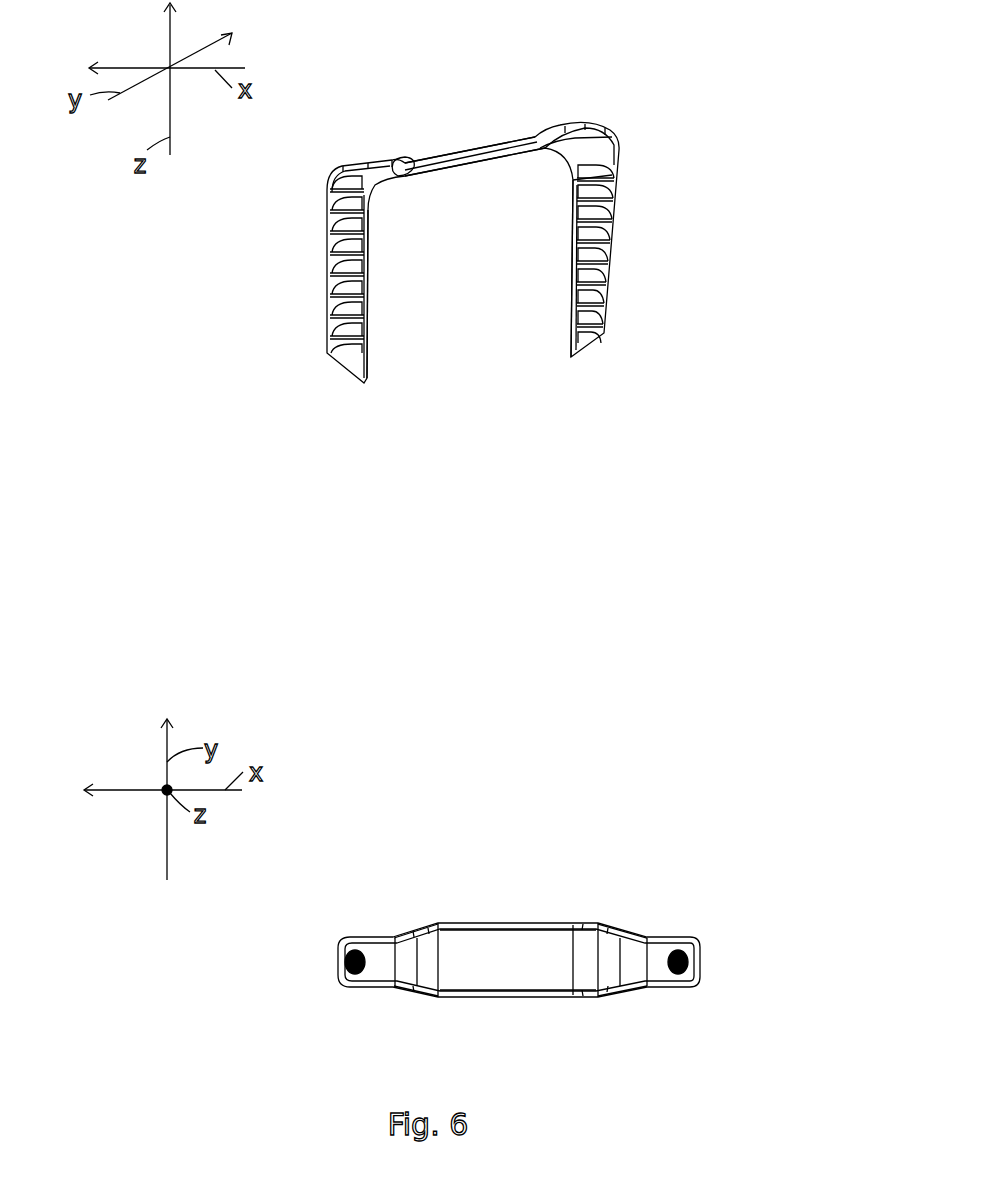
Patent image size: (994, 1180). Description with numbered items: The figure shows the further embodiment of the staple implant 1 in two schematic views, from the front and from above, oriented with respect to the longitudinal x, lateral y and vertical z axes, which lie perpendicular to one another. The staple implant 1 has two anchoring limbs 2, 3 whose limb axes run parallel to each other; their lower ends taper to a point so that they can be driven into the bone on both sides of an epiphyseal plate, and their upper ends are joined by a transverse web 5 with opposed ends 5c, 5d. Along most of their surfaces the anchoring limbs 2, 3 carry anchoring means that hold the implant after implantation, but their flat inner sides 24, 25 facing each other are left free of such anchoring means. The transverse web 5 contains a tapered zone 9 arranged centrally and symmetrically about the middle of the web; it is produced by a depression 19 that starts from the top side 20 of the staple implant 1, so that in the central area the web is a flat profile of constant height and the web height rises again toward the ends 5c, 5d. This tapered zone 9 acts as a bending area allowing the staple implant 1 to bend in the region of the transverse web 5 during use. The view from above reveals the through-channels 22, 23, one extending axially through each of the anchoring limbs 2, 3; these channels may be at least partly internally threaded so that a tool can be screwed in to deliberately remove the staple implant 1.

The staple implant 1 is at (636, 88).
The anchoring limb 2 is at (345, 272).
The anchoring limb 3 is at (608, 207).
The transverse web 5 is at (405, 172).
The tapered zone 9 is at (452, 172).
The depression 19 is at (478, 163).
The flat inner side 24 is at (366, 320).
The flat inner side 25 is at (577, 300).
The top side 20 is at (570, 940).
The end of transverse web 5c is at (413, 934).
The end of transverse web 5d is at (632, 936).
The through-channel 22 is at (342, 958).
The through-channel 23 is at (690, 956).